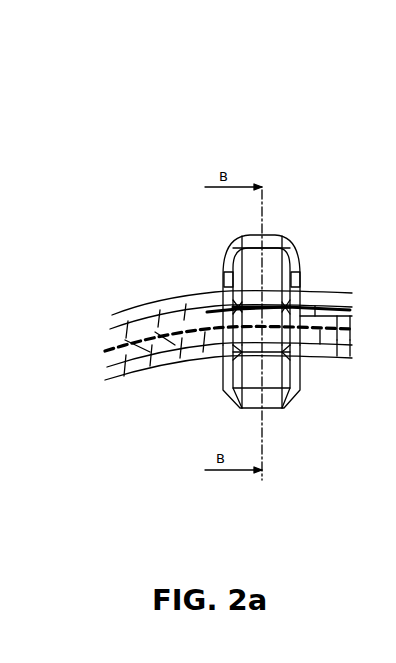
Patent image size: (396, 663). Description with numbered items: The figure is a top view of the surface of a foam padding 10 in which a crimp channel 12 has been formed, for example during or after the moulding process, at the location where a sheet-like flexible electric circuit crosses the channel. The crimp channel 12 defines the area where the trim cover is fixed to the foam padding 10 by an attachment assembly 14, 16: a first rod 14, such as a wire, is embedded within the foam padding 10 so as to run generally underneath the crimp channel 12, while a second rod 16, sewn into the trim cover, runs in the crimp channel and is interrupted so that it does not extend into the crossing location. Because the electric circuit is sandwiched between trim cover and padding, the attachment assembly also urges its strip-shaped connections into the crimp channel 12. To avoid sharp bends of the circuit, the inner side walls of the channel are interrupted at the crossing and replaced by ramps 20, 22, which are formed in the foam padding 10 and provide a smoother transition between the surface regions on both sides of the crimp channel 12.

The foam padding 10 is at (148, 431).
The crimp channel 12 is at (351, 306).
The first rod 14 is at (190, 311).
The second rod 16 is at (190, 311).
The ramp 20 is at (281, 251).
The ramp 22 is at (276, 404).